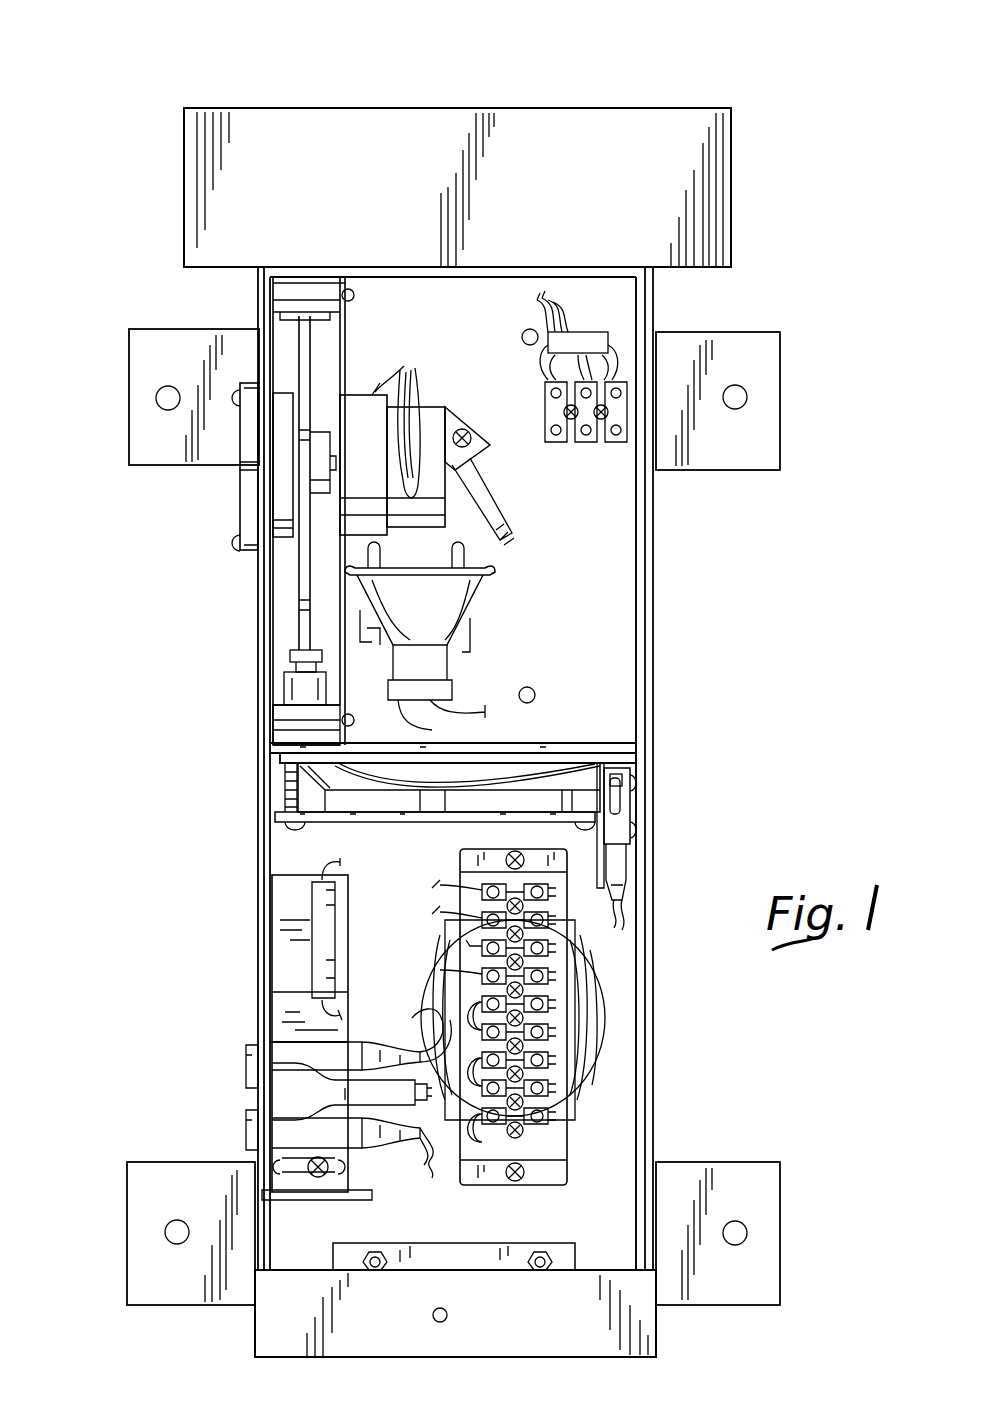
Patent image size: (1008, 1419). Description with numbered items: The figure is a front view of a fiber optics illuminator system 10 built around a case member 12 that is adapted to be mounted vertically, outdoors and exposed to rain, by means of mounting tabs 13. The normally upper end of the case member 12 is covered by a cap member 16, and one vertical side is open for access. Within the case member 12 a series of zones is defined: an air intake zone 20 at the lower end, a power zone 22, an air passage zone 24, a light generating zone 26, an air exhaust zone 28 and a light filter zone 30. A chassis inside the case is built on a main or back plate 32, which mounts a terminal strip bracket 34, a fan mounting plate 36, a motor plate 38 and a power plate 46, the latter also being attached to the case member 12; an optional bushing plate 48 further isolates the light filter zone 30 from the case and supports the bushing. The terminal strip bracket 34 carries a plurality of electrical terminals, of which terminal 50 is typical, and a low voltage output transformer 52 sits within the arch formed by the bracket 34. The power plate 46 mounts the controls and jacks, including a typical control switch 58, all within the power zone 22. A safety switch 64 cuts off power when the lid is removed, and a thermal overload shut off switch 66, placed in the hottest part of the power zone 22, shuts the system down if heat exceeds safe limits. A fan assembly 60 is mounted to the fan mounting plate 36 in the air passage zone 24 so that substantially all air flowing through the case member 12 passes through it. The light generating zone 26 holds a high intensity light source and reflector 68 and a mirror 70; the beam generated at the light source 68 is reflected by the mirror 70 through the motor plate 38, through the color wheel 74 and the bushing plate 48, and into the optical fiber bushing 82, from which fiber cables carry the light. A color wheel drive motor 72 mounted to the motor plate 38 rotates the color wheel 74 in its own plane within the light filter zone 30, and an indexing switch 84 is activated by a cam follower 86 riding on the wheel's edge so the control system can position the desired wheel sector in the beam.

The fiber optics illuminator system 10 is at (178, 86).
The case member 12 is at (656, 695).
The mounting tabs 13 is at (163, 338).
The cap member 16 is at (698, 130).
The air intake zone 20 is at (690, 1346).
The power zone 22 is at (680, 1067).
The air passage zone 24 is at (664, 774).
The light generating zone 26 is at (680, 577).
The air exhaust zone 28 is at (758, 250).
The light filter zone 30 is at (290, 617).
The back plate 32 is at (598, 565).
The terminal strip bracket 34 is at (447, 1160).
The fan mounting plate 36 is at (582, 745).
The motor plate 38 is at (342, 340).
The power plate 46 is at (340, 988).
The bushing plate 48 is at (268, 685).
The electrical terminal 50 is at (570, 1183).
The low voltage output transformer 52 is at (595, 982).
The control switch 58 is at (255, 1095).
The fan assembly 60 is at (345, 800).
The safety switch 64 is at (622, 782).
The thermal overload shut off switch 66 is at (614, 833).
The high intensity light source and associated reflector 68 is at (490, 606).
The mirror 70 is at (508, 507).
The color wheel drive motor 72 is at (358, 410).
The color wheel 74 is at (303, 580).
The optical fiber bushing 82 is at (250, 497).
The indexing switch 84 is at (267, 682).
The cam follower 86 is at (288, 643).